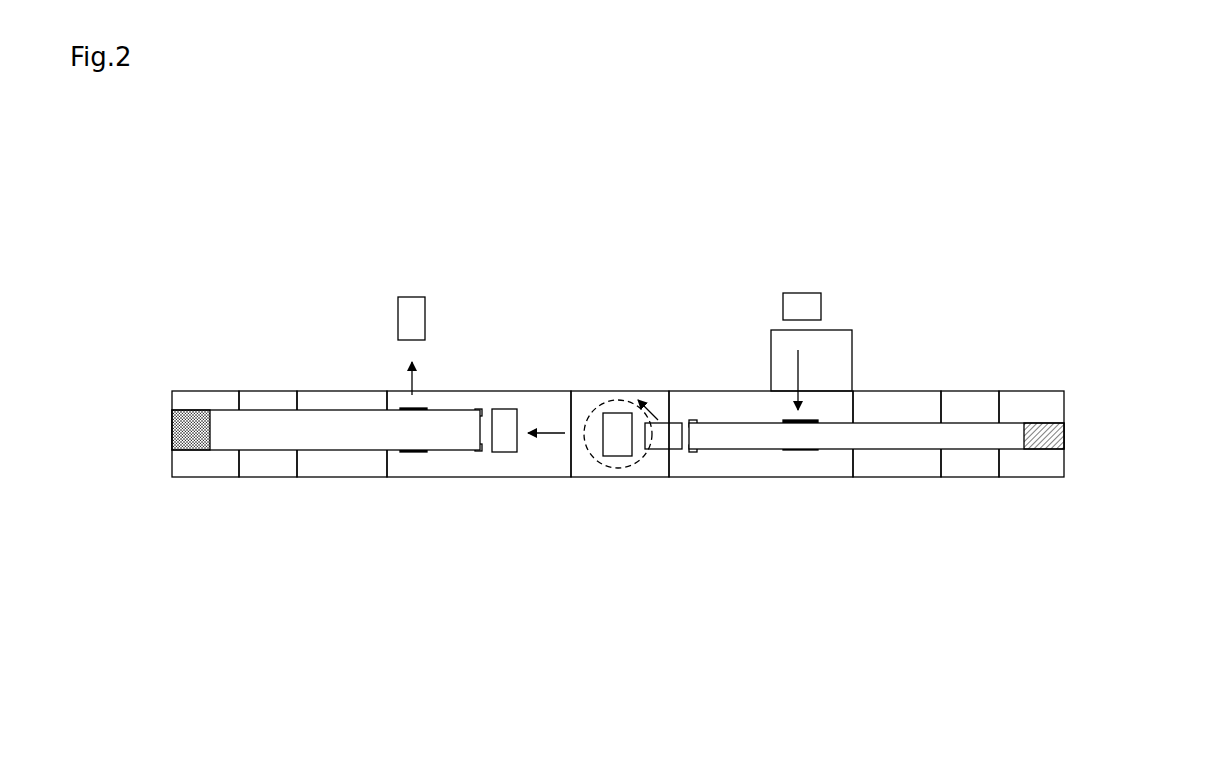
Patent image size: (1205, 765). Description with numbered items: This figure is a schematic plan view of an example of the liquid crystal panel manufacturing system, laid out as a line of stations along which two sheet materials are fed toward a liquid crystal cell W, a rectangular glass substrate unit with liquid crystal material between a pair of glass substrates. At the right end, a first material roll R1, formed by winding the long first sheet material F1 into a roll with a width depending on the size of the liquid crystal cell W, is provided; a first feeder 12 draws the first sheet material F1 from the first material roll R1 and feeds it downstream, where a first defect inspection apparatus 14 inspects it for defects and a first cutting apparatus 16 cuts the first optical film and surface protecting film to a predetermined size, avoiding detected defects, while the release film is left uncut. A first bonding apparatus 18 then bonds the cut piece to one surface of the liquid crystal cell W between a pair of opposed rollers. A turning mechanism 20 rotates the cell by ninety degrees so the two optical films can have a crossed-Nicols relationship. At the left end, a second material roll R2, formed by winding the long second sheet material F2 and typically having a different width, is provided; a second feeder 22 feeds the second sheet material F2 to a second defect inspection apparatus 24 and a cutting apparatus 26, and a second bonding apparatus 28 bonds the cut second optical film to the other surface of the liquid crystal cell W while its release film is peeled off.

The first feeder 12 is at (1027, 478).
The first defect inspection apparatus 14 is at (970, 478).
The first cutting apparatus 16 is at (890, 478).
The first bonding apparatus 18 is at (778, 478).
The turning mechanism 20 is at (590, 478).
The second feeder 22 is at (200, 478).
The second defect inspection apparatus 24 is at (253, 478).
The cutting apparatus 26 is at (325, 478).
The second bonding apparatus 28 is at (408, 478).
The first sheet material F1 is at (975, 422).
The second sheet material F2 is at (272, 410).
The first material roll R1 is at (1058, 423).
The second material roll R2 is at (172, 430).
The liquid crystal cell W is at (412, 295).